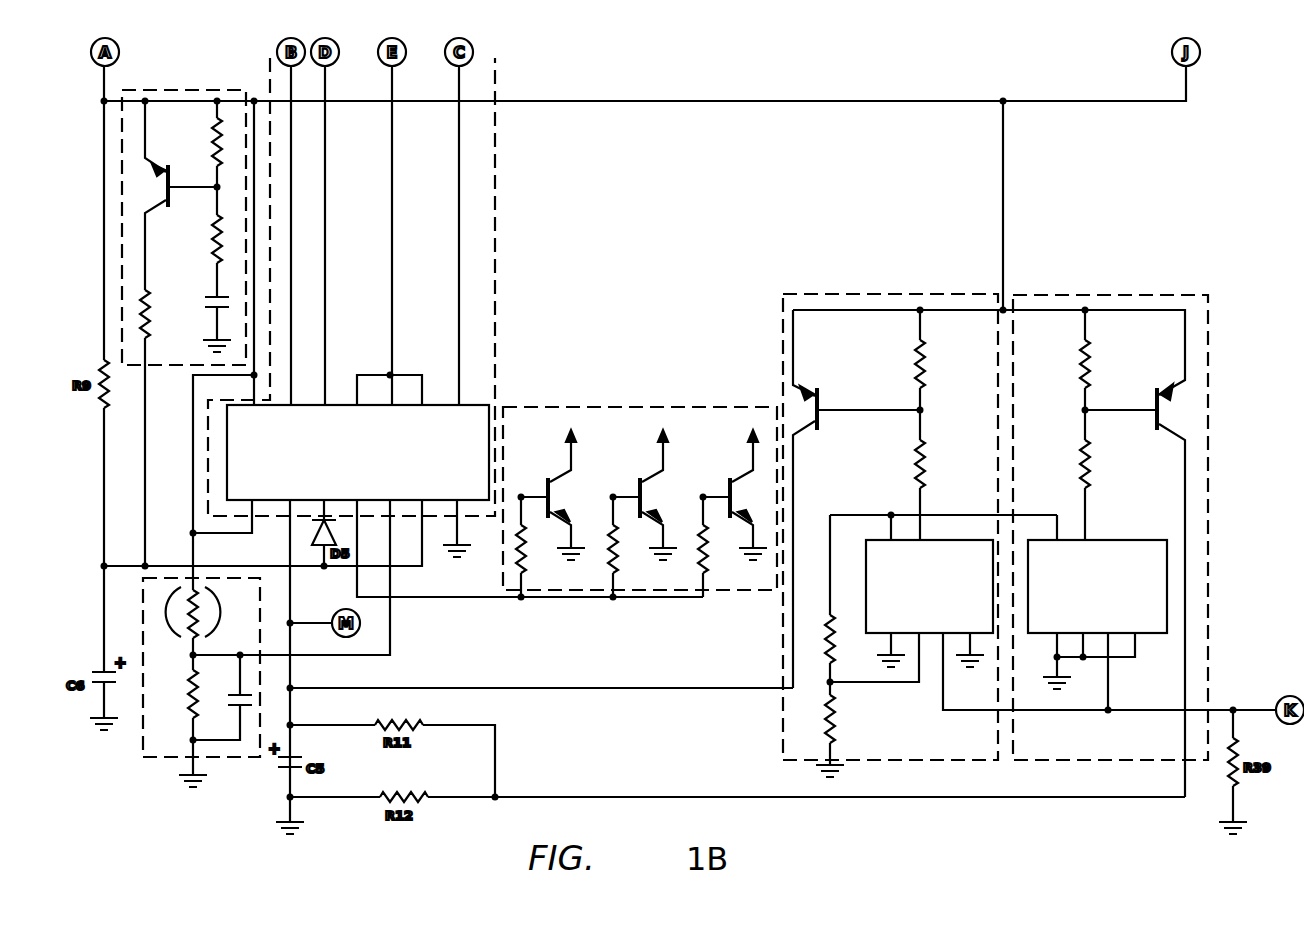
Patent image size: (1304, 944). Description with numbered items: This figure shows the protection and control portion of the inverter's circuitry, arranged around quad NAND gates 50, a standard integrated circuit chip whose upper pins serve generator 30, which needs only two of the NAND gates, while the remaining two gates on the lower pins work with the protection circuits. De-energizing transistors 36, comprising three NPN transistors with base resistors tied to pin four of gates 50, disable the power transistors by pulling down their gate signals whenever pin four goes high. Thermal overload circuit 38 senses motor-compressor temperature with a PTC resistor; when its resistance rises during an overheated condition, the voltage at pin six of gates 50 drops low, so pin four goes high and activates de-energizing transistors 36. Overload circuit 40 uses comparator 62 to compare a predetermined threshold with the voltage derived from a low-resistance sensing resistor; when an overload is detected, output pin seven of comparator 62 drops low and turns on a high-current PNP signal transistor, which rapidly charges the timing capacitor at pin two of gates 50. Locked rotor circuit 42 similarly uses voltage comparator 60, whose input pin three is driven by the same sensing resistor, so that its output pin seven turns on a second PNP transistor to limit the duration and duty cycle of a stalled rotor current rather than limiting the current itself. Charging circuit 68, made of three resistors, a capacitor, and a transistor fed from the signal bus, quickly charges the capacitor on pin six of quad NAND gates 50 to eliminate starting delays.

The generator 30 is at (502, 90).
The de-energizing transistors 36 is at (626, 404).
The thermal overload circuit 38 is at (140, 762).
The overload circuit 40 is at (874, 290).
The locked rotor circuit 42 is at (1109, 290).
The quad NAND gates 50 is at (449, 464).
The voltage comparator 60 is at (1158, 569).
The comparator 62 is at (983, 569).
The charging circuit 68 is at (174, 88).